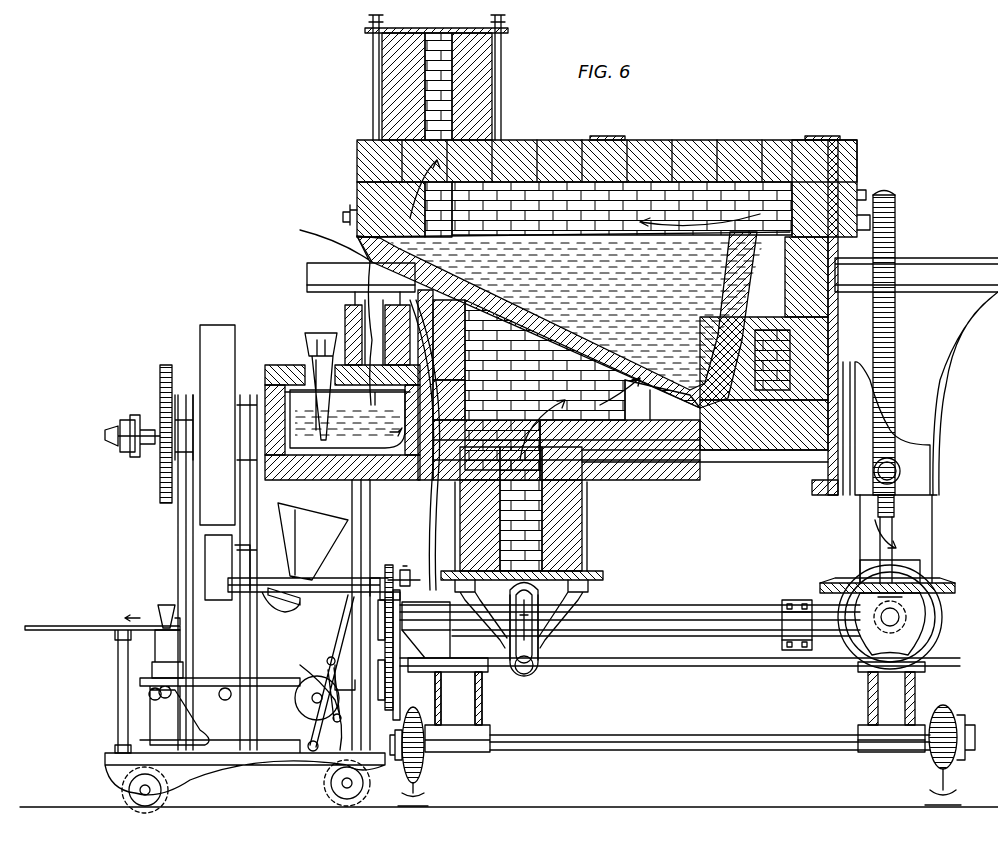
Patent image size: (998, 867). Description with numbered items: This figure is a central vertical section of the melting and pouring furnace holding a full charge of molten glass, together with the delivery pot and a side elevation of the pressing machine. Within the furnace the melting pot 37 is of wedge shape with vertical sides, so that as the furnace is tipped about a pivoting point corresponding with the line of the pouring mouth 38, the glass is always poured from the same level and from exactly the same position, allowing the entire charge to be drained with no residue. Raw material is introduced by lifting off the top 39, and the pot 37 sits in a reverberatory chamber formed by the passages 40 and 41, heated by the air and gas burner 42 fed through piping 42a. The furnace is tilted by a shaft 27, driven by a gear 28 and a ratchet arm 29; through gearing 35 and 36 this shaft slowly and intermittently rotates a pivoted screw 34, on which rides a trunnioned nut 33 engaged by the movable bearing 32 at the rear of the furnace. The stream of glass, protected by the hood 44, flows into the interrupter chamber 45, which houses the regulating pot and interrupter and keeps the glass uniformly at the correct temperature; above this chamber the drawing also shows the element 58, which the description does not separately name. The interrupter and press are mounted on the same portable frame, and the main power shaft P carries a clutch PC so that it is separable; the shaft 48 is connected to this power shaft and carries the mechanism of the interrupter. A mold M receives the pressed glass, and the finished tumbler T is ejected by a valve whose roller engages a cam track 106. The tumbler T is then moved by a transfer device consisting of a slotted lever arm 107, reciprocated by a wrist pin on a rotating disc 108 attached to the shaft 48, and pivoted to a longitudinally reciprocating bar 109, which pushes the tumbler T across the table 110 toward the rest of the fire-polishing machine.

The top 39 is at (663, 152).
The passage 40 is at (558, 209).
The melting pot 37 is at (620, 342).
The pouring mouth 38 is at (355, 236).
The passage 41 is at (559, 385).
The air and gas burner 42 is at (590, 575).
The piping 42a is at (538, 672).
The shaft 27 is at (690, 606).
The pivoted screw 34 is at (895, 355).
The movable bearing 32 is at (902, 438).
The trunnioned nut 33 is at (892, 468).
The gearing 35 is at (905, 582).
The gearing 36 is at (920, 640).
The hood 44 is at (345, 322).
The interrupter chamber 45 is at (275, 368).
The stopper 58 is at (318, 338).
The clutch PC is at (132, 422).
The main power shaft P is at (105, 437).
The reciprocating bar 109 is at (225, 590).
The slotted lever arm 107 is at (360, 600).
The gear 28 is at (393, 567).
The ratchet arm 29 is at (396, 688).
The rotating disc 108 is at (310, 712).
The shaft 48 is at (316, 745).
The cam track 106 is at (163, 718).
The table 110 is at (85, 626).
The tumbler T is at (160, 612).
The mold M is at (155, 648).